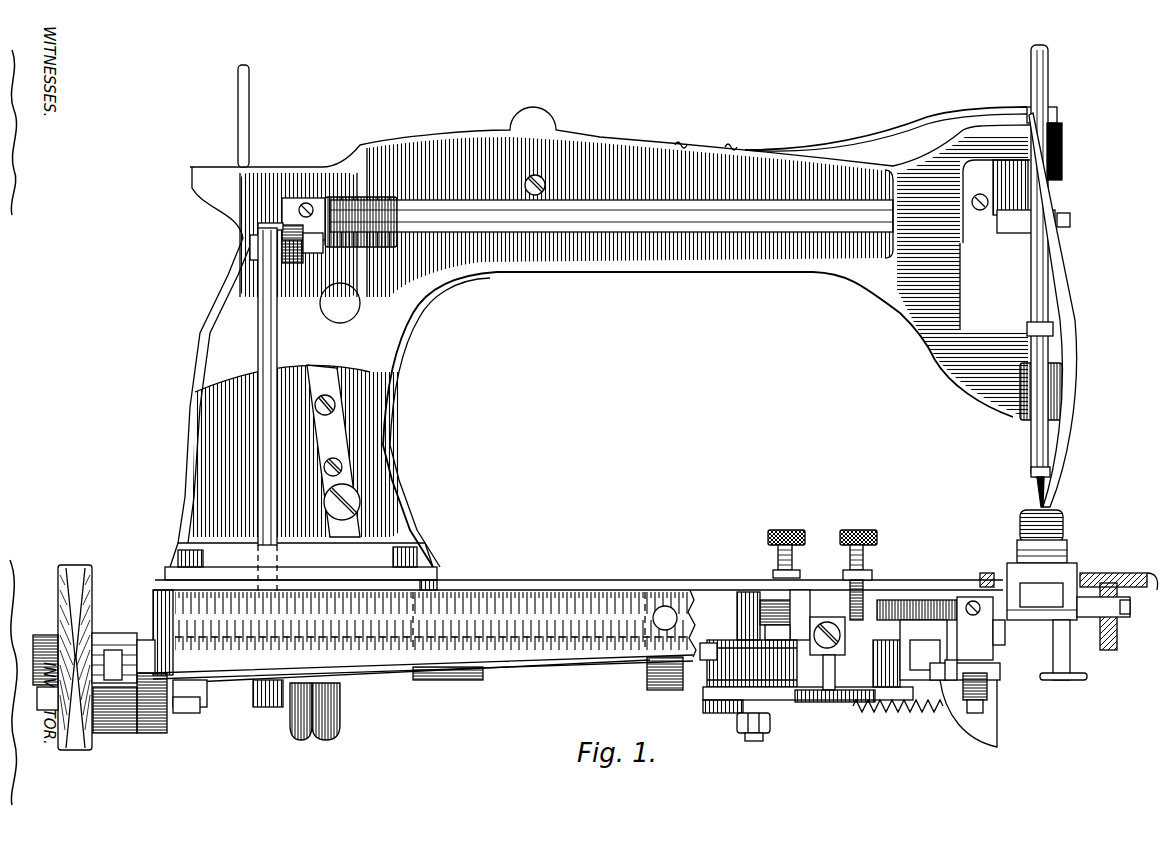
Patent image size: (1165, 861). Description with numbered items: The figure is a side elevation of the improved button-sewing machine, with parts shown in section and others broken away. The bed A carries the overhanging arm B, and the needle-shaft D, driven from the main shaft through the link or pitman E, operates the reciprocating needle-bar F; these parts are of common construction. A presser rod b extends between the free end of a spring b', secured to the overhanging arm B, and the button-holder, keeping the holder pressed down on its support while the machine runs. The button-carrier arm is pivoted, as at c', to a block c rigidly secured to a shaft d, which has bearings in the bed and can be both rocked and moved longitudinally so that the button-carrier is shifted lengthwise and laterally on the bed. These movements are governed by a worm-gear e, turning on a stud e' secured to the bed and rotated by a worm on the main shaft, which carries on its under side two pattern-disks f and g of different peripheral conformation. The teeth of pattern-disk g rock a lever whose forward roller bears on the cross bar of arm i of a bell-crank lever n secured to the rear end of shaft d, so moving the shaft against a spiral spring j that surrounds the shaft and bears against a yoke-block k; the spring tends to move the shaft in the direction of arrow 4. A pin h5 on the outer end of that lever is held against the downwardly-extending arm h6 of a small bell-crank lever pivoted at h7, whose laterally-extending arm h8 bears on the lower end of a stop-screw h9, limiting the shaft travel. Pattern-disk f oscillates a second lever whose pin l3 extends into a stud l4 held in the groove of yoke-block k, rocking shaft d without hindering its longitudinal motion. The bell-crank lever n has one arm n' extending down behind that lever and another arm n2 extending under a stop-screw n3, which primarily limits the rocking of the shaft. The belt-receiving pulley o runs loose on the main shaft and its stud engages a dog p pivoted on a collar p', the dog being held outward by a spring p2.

The bed A is at (586, 581).
The overhanging arm B is at (623, 148).
The spring b' is at (901, 120).
The presser rod b is at (1064, 310).
The needle-shaft D is at (603, 235).
The link or pitman E is at (278, 350).
The reciprocating needle-bar F is at (1032, 284).
The block c is at (1047, 595).
The pivot c' is at (1069, 572).
The shaft d is at (1130, 607).
The belt-receiving pulley o is at (60, 619).
The dog p is at (216, 722).
The collar p' is at (114, 646).
The spring p2 is at (130, 640).
The worm-gear e is at (722, 671).
The stud e' is at (754, 739).
The pattern-disk g is at (705, 706).
The pattern-disk f is at (731, 713).
The bell-crank lever n is at (769, 629).
The arm n' is at (796, 602).
The arm n2 is at (772, 592).
The stop-screw n3 is at (796, 572).
The pin or finger h5 is at (816, 702).
The downwardly-extending arm h6 is at (831, 670).
The pivot of bell-crank lever h7 is at (817, 620).
The laterally-extending arm h8 is at (838, 630).
The stop-screw h9 is at (872, 568).
The arm i is at (906, 706).
The spiral spring j is at (910, 604).
The yoke-block k is at (965, 672).
The pin l3 is at (987, 673).
The stud l4 is at (1003, 655).
The arrow 4 is at (937, 569).